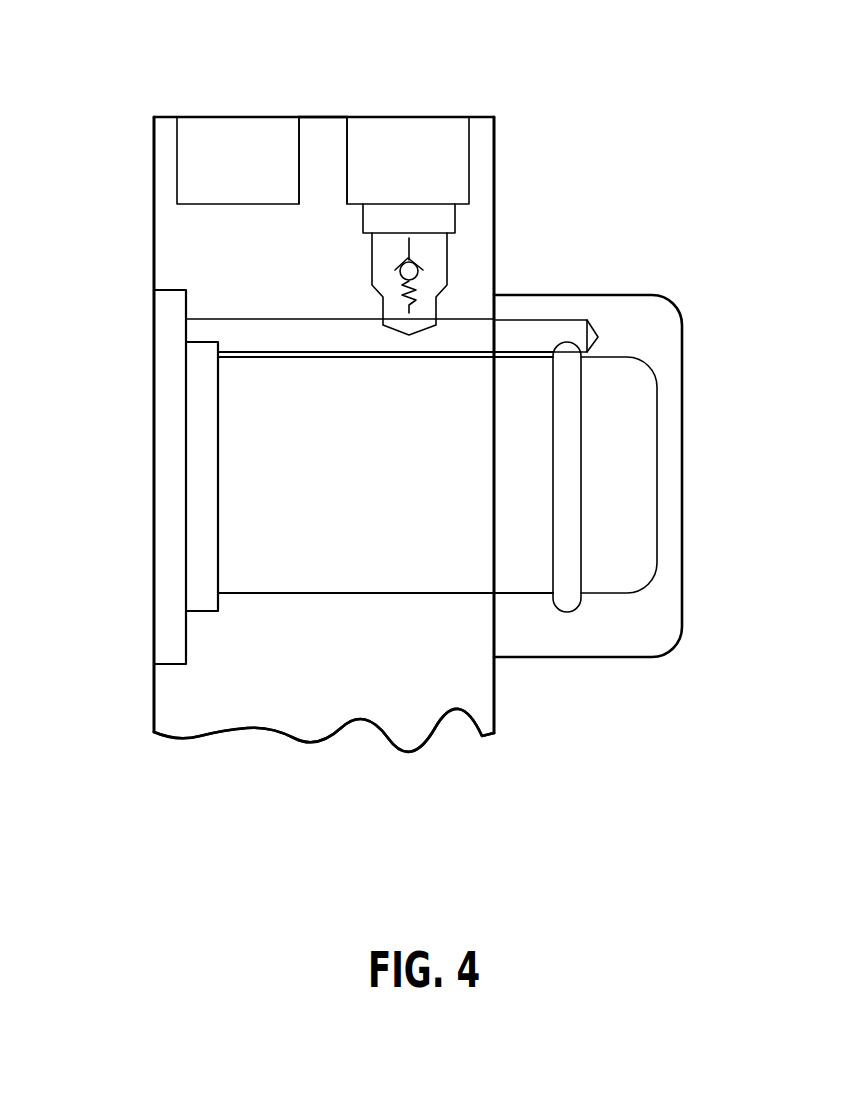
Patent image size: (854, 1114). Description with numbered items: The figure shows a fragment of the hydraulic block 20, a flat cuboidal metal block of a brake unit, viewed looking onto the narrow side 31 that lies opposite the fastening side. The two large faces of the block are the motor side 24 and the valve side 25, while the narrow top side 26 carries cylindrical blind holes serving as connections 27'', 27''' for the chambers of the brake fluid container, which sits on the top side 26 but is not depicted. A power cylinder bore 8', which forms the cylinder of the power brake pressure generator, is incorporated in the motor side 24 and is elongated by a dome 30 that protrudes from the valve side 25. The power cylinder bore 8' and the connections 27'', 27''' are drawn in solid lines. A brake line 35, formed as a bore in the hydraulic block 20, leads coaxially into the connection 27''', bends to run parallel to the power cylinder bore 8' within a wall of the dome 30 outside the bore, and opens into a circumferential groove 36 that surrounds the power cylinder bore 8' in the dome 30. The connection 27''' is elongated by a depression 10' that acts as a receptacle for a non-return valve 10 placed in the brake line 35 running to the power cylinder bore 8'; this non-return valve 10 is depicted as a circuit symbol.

The power cylinder bore 8' is at (331, 477).
The non-return valve 10 is at (475, 262).
The depression 10' is at (469, 269).
The hydraulic block 20 is at (327, 140).
The motor side 24 is at (154, 190).
The valve side 25 is at (494, 190).
The top side 26 is at (308, 117).
The connection 27'' is at (238, 112).
The connection 27''' is at (408, 109).
The dome 30 is at (643, 623).
The narrow side 31 is at (337, 697).
The brake line 35 is at (538, 333).
The circumferential groove 36 is at (567, 368).